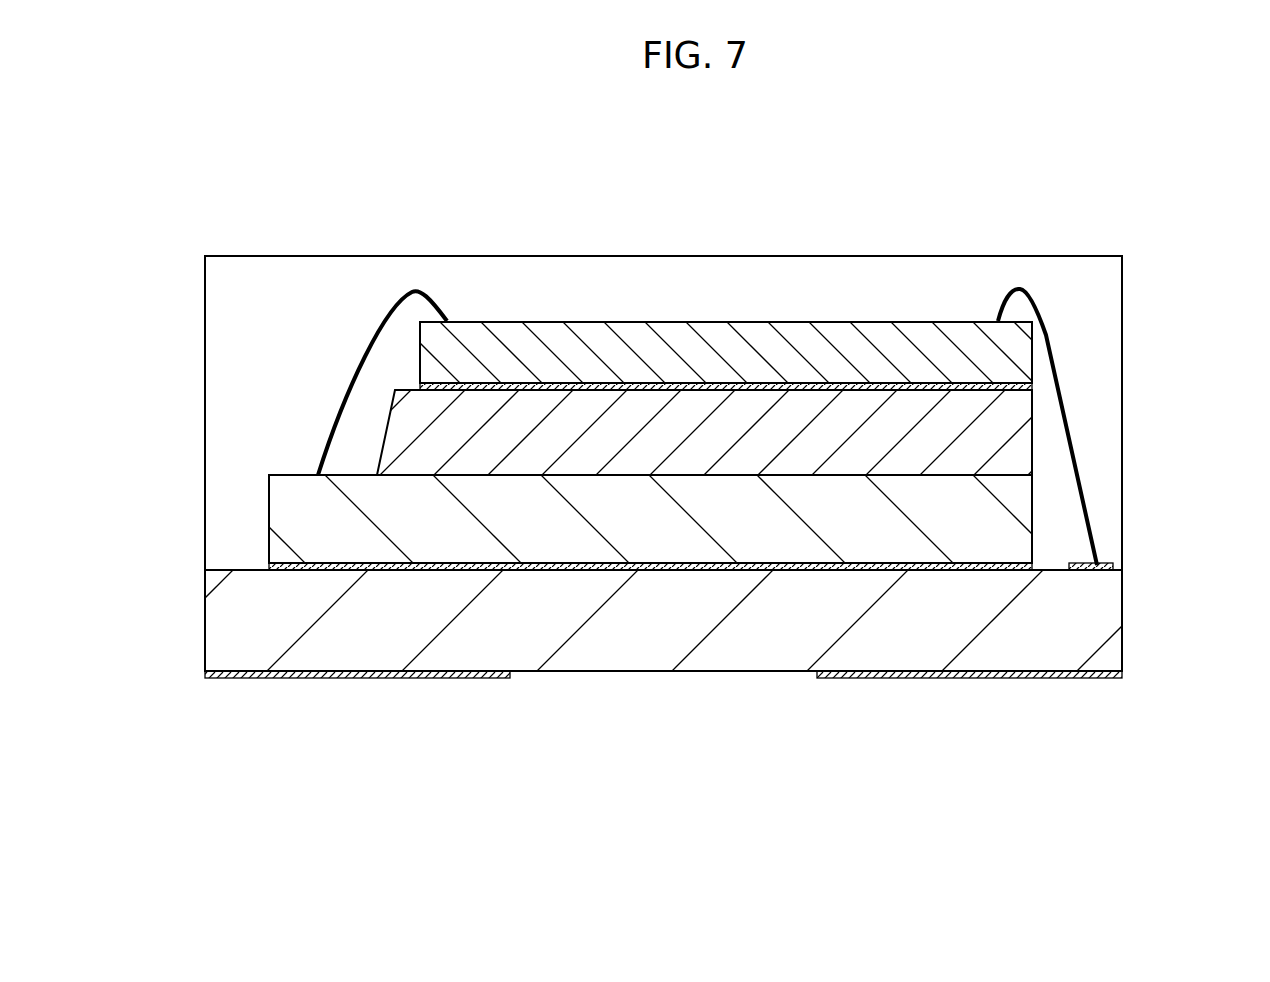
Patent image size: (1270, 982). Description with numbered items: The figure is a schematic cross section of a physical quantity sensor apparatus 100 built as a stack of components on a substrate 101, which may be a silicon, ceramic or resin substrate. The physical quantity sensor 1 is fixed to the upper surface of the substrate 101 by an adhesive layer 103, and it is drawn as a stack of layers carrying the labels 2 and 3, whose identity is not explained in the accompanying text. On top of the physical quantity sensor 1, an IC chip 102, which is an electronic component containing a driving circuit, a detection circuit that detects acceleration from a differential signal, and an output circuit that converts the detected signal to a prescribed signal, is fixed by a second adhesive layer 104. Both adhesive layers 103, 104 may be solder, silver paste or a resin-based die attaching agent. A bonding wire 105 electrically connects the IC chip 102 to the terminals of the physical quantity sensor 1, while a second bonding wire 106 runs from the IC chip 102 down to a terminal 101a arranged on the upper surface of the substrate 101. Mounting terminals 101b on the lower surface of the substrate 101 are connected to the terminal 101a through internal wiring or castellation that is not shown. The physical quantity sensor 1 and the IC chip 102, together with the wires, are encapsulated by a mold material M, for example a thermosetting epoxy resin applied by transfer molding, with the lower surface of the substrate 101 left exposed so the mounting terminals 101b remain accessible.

The physical quantity sensor apparatus 100 is at (1098, 152).
The mold material M is at (293, 287).
The substrate 101 is at (715, 640).
The terminal 101a is at (1105, 561).
The mounting terminal 101b is at (333, 680).
The adhesive layer 103 is at (575, 568).
The second layer 2 is at (828, 543).
The third layer 3 is at (1010, 428).
The physical quantity sensor 1 is at (1058, 507).
The adhesive layer 104 is at (595, 385).
The IC chip 102 is at (725, 345).
The bonding wire 105 is at (418, 288).
The bonding wire 106 is at (1020, 288).